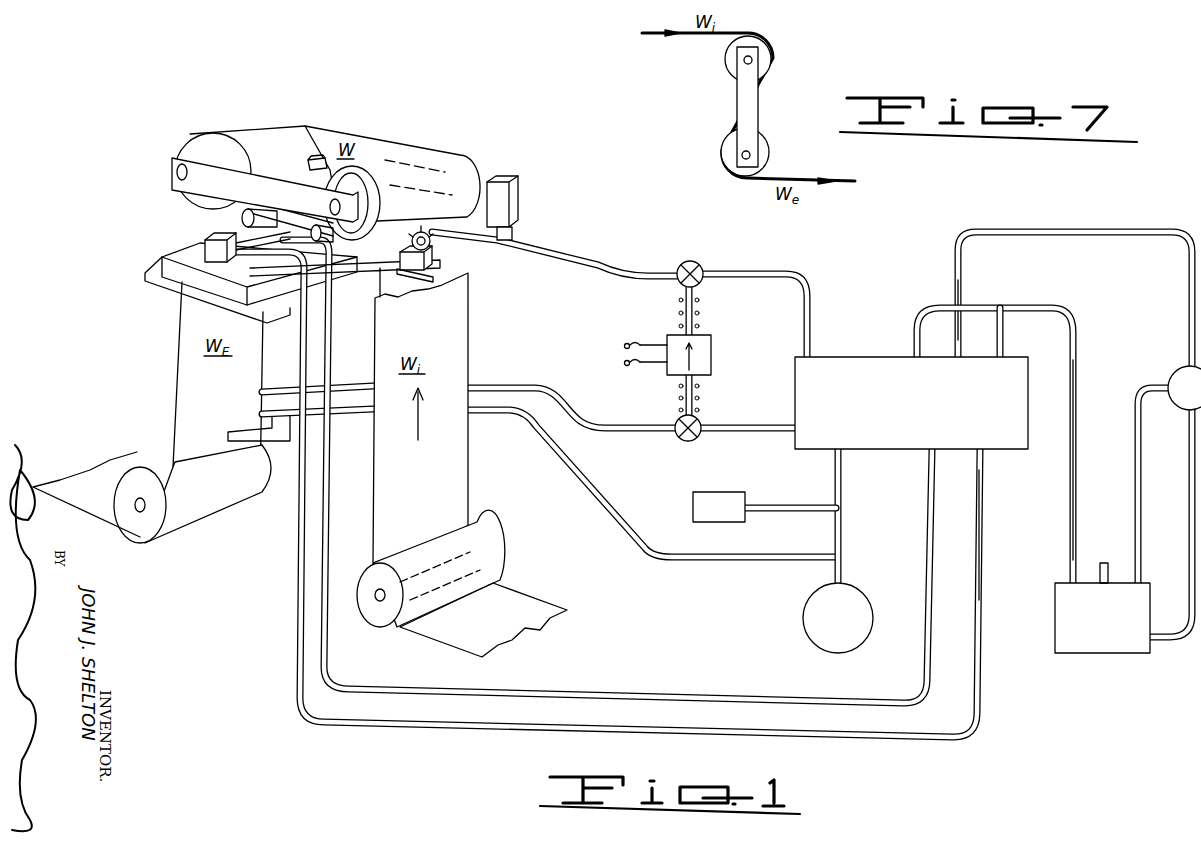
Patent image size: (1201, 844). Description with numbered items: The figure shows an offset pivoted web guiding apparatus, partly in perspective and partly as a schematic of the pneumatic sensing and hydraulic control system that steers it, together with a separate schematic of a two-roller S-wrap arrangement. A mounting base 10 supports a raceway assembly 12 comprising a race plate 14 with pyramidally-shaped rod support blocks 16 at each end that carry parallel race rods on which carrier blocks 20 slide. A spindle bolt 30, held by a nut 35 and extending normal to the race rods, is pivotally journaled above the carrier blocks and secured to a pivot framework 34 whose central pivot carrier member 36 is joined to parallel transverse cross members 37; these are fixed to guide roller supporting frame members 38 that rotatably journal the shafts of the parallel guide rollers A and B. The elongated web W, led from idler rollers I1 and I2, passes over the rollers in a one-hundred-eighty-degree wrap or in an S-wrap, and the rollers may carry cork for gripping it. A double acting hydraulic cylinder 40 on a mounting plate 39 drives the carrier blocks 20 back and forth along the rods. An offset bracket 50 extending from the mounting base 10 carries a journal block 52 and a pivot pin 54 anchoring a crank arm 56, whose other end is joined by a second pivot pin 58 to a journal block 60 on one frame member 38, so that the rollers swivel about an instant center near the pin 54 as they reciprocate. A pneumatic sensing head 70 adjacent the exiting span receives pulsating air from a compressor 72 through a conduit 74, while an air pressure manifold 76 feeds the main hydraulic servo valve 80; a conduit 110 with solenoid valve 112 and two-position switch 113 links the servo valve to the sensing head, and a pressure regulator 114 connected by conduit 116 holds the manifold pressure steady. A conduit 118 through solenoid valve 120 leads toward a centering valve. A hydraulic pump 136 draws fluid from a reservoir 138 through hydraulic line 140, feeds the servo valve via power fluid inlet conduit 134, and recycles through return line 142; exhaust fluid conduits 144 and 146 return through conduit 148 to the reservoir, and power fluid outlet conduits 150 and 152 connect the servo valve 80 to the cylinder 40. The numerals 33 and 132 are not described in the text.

In FIG. 1, the mounting base 10 is at (168, 266).
In FIG. 1, the raceway assembly 12 is at (237, 225).
In FIG. 1, the race plate 14 is at (328, 282).
In FIG. 1, the rod support blocks 16 is at (243, 222).
In FIG. 1, the carrier blocks 20 is at (290, 208).
In FIG. 1, the spindle bolt 30 is at (322, 160).
In FIG. 1, the bar 33 is at (247, 184).
In FIG. 1, the pivot framework 34 is at (162, 185).
In FIG. 1, the nut 35 is at (330, 190).
In FIG. 1, the central pivot carrier member 36 is at (314, 158).
In FIG. 1, the transverse cross members 37 is at (272, 165).
In FIG. 1, the guide roller supporting frame members 38 is at (480, 178).
In FIG. 7, the guide roller supporting frame members 38 is at (737, 97).
In FIG. 1, the mounting plate 39 is at (306, 197).
In FIG. 1, the double acting hydraulic cylinder 40 is at (222, 262).
In FIG. 1, the offset bracket 50 is at (376, 277).
In FIG. 1, the journal block 52 is at (435, 260).
In FIG. 1, the pivot pin 54 is at (420, 231).
In FIG. 1, the crank arm 56 is at (470, 242).
In FIG. 1, the second pivot pin 58 is at (512, 237).
In FIG. 1, the journal block 60 is at (513, 196).
In FIG. 1, the pneumatic sensing head 70 is at (280, 436).
In FIG. 1, the supply of compressed air 72 is at (808, 622).
In FIG. 1, the conduit 74 is at (696, 560).
In FIG. 1, the air pressure manifold 76 is at (841, 488).
In FIG. 1, the main hydraulic servo valve 80 is at (867, 363).
In FIG. 1, the conduit 110 is at (710, 433).
In FIG. 1, the solenoid valve 112 is at (676, 434).
In FIG. 1, the two-position electrical switch 113 is at (668, 340).
In FIG. 1, the adjustable constant pressure regulator 114 is at (737, 515).
In FIG. 1, the conduit 116 is at (758, 514).
In FIG. 1, the conduit 118 is at (739, 273).
In FIG. 1, the solenoid valve 120 is at (680, 262).
In FIG. 1, the conduit 132 is at (955, 267).
In FIG. 1, the power fluid inlet conduit 134 is at (1058, 236).
In FIG. 1, the hydraulic pump 136 is at (1182, 369).
In FIG. 1, the reservoir 138 is at (1118, 622).
In FIG. 1, the hydraulic line 140 is at (1188, 508).
In FIG. 1, the return line 142 is at (1141, 477).
In FIG. 1, the exhaust fluid conduit 144 is at (918, 316).
In FIG. 1, the exhaust fluid conduit 146 is at (1002, 337).
In FIG. 1, the conduit 148 is at (1076, 437).
In FIG. 1, the power fluid outlet conduit 150 is at (927, 545).
In FIG. 1, the power fluid outlet conduit 152 is at (983, 551).
In FIG. 1, the guide roller A is at (466, 160).
In FIG. 7, the guide roller A is at (729, 61).
In FIG. 1, the guide roller B is at (193, 141).
In FIG. 7, the guide roller B is at (769, 152).
In FIG. 1, the idler roller I1 is at (482, 537).
In FIG. 1, the idler roller I2 is at (143, 540).
In FIG. 1, the web W is at (483, 620).